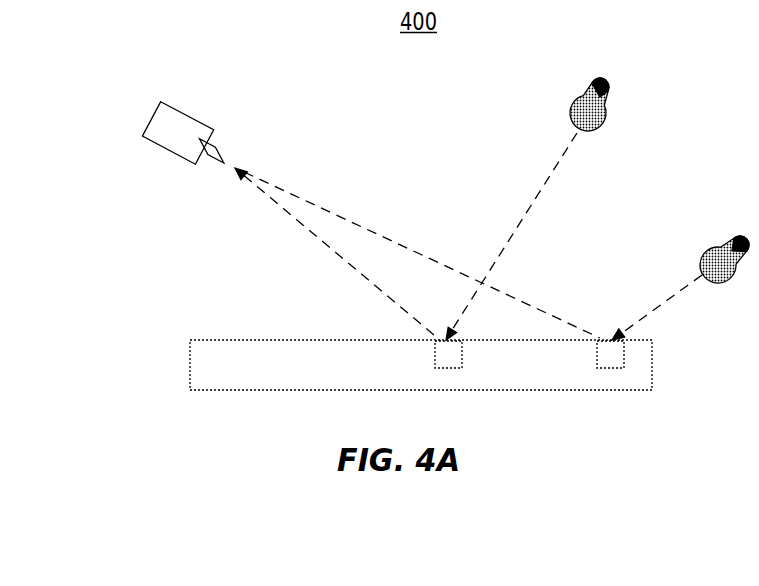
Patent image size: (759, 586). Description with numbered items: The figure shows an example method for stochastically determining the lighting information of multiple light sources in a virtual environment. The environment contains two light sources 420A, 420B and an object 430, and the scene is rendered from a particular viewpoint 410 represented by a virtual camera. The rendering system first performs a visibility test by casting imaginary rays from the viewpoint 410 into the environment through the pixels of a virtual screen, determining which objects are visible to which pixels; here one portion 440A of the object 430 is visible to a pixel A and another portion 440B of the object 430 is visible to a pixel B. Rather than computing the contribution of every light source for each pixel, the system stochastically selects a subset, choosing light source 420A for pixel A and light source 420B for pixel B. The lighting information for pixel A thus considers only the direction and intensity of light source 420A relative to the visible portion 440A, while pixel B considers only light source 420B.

The viewpoint 410 is at (152, 120).
The light source 420A is at (560, 108).
The light source 420B is at (690, 253).
The object 430 is at (190, 346).
The portion of the object 440A is at (434, 368).
The portion of the object 440B is at (596, 368).